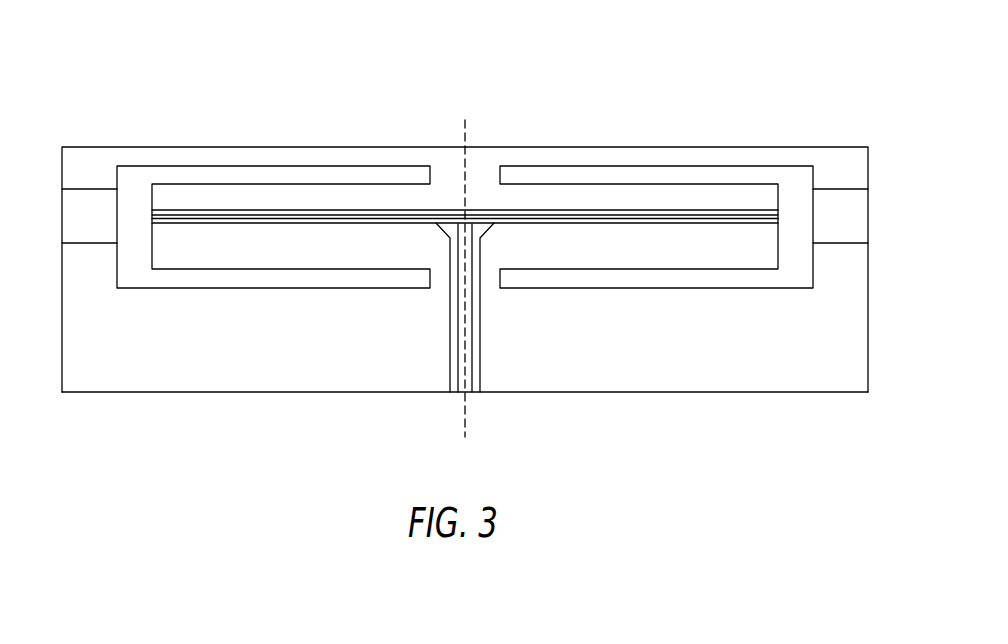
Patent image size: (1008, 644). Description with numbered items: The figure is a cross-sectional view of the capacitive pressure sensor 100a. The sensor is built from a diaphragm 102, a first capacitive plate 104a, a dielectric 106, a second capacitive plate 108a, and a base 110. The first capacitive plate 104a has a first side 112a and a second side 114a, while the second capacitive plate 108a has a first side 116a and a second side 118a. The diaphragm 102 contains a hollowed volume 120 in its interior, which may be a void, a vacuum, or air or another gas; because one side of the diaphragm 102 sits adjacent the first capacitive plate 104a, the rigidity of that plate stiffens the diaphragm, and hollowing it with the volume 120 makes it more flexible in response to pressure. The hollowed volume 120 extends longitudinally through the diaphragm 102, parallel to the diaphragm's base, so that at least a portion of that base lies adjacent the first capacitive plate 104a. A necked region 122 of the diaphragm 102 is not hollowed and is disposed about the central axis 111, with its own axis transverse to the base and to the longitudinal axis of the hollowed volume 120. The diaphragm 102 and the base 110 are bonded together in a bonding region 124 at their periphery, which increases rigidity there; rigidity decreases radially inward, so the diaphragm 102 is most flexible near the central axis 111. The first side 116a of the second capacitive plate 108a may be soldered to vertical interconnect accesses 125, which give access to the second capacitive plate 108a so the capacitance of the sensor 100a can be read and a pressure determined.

The capacitive pressure sensor 100a is at (100, 82).
The diaphragm 102 is at (833, 163).
The first capacitive plate 104a is at (735, 213).
The dielectric 106 is at (352, 217).
The second capacitive plate 108a is at (675, 221).
The base 110 is at (813, 360).
The central axis 111 is at (460, 395).
The first side 112a is at (608, 217).
The second side 114a is at (680, 210).
The first side 116a is at (515, 223).
The second side 118a is at (512, 217).
The hollowed volume 120 is at (245, 177).
The necked region 122 is at (453, 177).
The bonding region 124 is at (75, 217).
The vertical interconnect access (VIAs) 125 is at (457, 382).